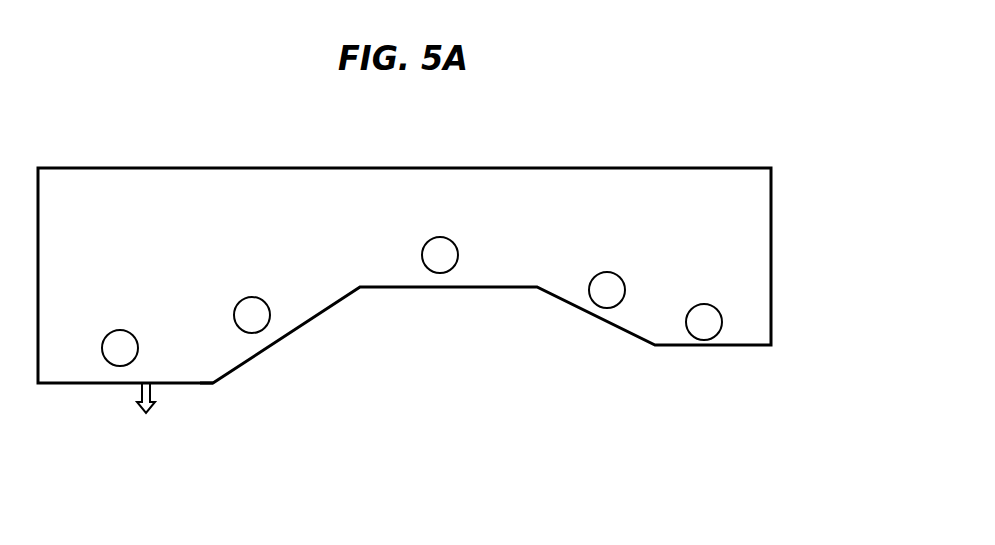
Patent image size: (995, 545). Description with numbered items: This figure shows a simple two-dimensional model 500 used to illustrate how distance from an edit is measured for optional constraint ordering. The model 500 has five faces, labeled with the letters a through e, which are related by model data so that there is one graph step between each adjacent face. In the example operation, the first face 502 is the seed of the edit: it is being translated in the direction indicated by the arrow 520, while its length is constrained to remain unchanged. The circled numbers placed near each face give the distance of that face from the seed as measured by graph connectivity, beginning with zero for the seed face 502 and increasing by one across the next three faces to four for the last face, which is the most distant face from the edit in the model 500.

The 2D model 500 is at (643, 168).
The face a 502 is at (198, 385).
The arrow 520 is at (143, 415).